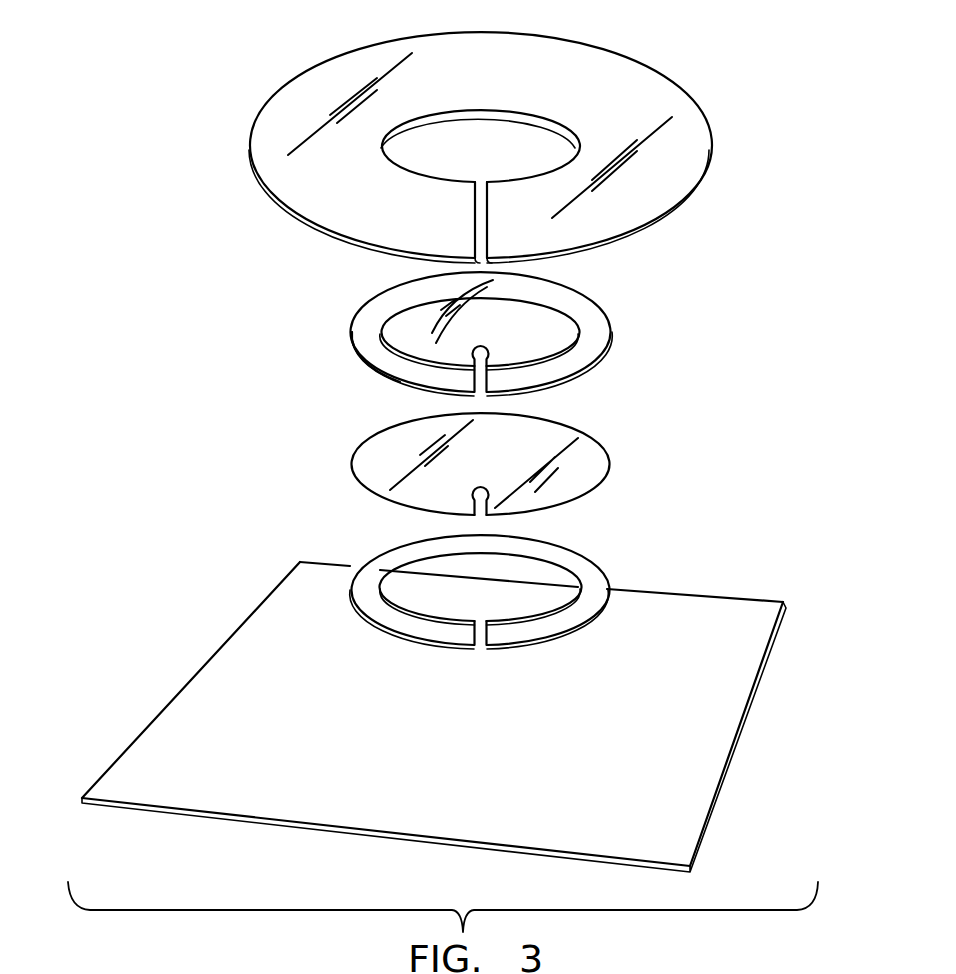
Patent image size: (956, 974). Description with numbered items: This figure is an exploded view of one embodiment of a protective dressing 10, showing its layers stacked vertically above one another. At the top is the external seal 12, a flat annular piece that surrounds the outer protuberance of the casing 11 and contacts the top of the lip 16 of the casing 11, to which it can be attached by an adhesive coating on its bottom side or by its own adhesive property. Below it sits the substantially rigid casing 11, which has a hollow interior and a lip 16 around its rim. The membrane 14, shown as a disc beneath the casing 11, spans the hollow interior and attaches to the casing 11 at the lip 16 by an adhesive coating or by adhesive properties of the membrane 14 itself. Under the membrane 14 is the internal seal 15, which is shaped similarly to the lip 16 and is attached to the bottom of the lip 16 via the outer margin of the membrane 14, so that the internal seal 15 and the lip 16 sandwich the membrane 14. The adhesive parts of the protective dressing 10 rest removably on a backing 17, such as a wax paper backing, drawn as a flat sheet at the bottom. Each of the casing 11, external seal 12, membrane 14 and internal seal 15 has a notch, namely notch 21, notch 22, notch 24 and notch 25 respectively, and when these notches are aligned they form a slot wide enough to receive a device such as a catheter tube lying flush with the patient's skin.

The protective dressing 10 is at (727, 973).
The casing 11 is at (333, 325).
The external seal 12 is at (255, 81).
The membrane 14 is at (332, 458).
The internal seal 15 is at (384, 540).
The lip 16 is at (377, 355).
The backing 17 is at (713, 630).
The notch 21 is at (484, 388).
The notch 22 is at (479, 245).
The notch 24 is at (476, 515).
The notch 25 is at (477, 628).